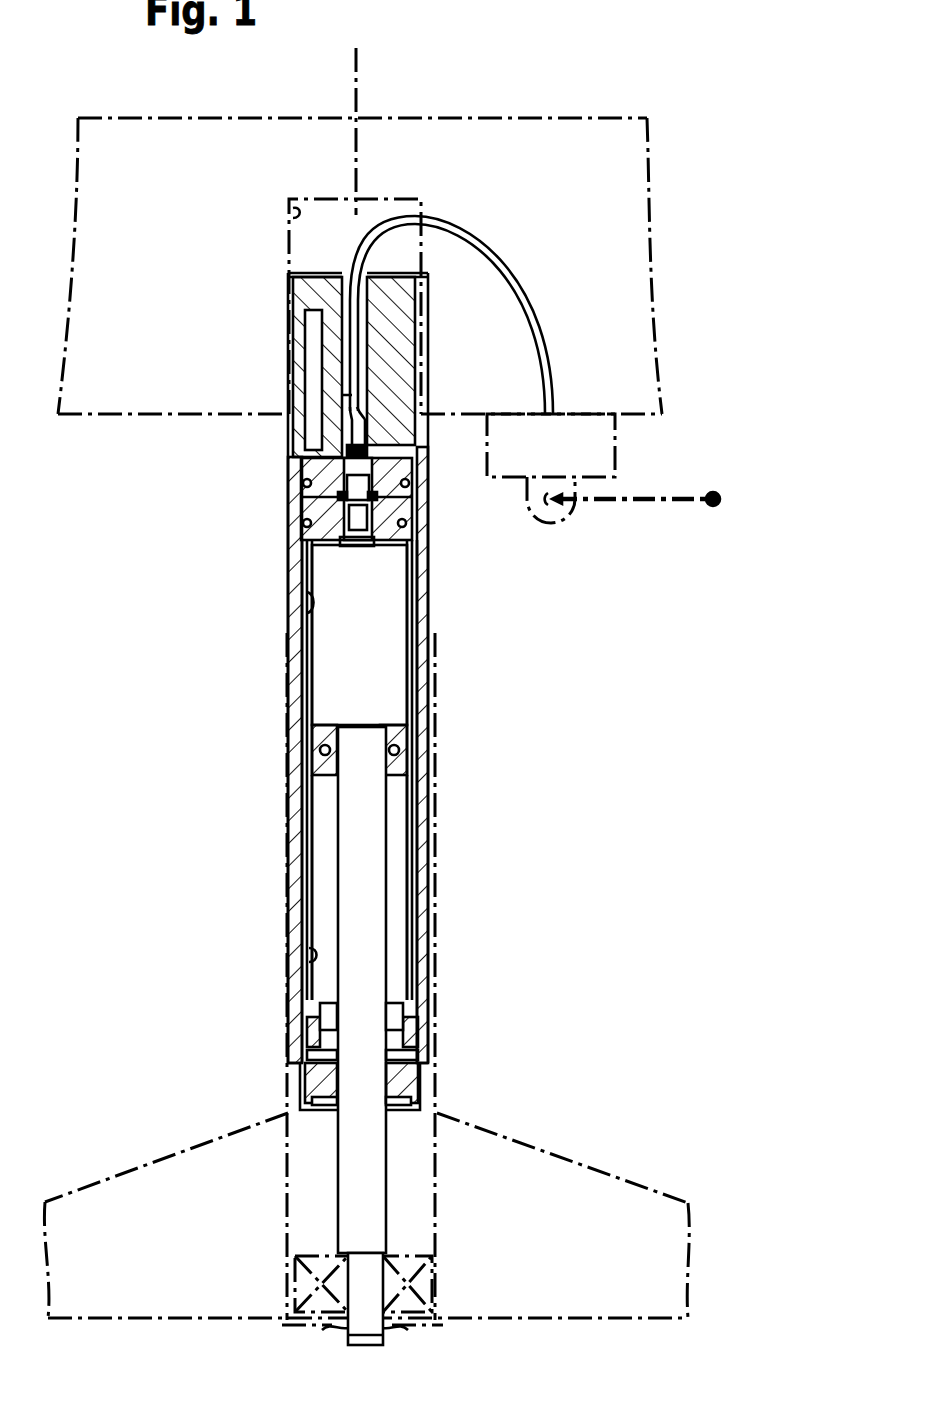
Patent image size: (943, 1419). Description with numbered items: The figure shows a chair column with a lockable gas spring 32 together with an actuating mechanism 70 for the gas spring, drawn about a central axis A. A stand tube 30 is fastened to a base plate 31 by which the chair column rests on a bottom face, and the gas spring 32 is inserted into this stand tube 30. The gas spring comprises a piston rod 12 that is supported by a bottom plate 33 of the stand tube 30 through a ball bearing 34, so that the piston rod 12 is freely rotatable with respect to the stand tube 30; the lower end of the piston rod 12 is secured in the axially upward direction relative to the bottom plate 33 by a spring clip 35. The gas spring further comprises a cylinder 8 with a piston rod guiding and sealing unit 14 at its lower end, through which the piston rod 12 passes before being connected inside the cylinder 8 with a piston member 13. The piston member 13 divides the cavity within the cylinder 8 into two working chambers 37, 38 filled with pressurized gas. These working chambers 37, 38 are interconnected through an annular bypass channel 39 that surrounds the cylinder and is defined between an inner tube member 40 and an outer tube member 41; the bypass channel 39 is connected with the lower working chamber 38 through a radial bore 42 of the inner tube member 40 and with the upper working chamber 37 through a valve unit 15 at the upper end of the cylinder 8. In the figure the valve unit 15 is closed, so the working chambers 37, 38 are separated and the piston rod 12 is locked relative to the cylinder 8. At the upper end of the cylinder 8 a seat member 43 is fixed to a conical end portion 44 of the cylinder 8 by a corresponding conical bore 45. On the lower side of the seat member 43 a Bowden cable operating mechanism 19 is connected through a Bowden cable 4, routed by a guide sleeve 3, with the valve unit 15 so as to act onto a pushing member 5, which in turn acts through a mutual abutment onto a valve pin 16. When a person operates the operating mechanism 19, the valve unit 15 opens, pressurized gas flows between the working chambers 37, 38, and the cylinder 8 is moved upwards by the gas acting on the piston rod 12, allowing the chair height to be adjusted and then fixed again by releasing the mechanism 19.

The axis A is at (357, 72).
The guide sleeve 3 is at (372, 330).
The Bowden cable 4 is at (480, 237).
The pushing member 5 is at (362, 430).
The cylinder 8 is at (297, 592).
The piston rod 12 is at (370, 905).
The piston member 13 is at (410, 750).
The piston rod guiding and sealing unit 14 is at (400, 1085).
The valve unit 15 is at (302, 488).
The valve pin 16 is at (308, 467).
The Bowden cable operating mechanism 19 is at (615, 445).
The stand tube 30 is at (435, 948).
The base plate 31 is at (575, 1160).
The gas spring 32 is at (437, 833).
The bottom plate 33 is at (392, 1330).
The ball bearing 34 is at (432, 1285).
The spring clip 35 is at (338, 1330).
The working chamber 37 is at (380, 625).
The working chamber 38 is at (310, 885).
The annular bypass channel 39 is at (293, 675).
The inner tube member 40 is at (292, 620).
The outer tube member 41 is at (297, 793).
The radial bore 42 is at (313, 953).
The seat member 43 is at (620, 250).
The conical end portion 44 is at (295, 343).
The conical bore 45 is at (283, 223).
The actuating mechanism 70 is at (470, 205).